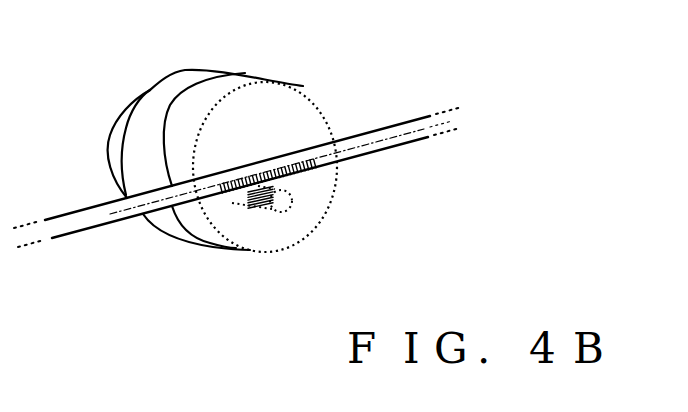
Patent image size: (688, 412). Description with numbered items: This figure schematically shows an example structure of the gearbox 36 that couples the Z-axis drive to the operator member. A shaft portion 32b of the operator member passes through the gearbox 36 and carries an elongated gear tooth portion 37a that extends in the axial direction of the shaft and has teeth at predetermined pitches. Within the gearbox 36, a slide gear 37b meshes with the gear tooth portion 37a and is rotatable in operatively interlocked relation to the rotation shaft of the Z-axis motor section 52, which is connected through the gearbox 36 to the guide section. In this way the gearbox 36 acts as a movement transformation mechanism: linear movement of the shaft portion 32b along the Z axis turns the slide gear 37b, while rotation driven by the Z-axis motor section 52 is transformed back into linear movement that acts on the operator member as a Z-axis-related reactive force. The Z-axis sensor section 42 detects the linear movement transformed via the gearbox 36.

The Z-axis sensor section 42 is at (120, 113).
The Z-axis motor section 52 is at (192, 82).
The gearbox 36 is at (233, 87).
The shaft portion 32b is at (382, 128).
The gear tooth portion 37a is at (290, 177).
The slide gear 37b is at (270, 213).